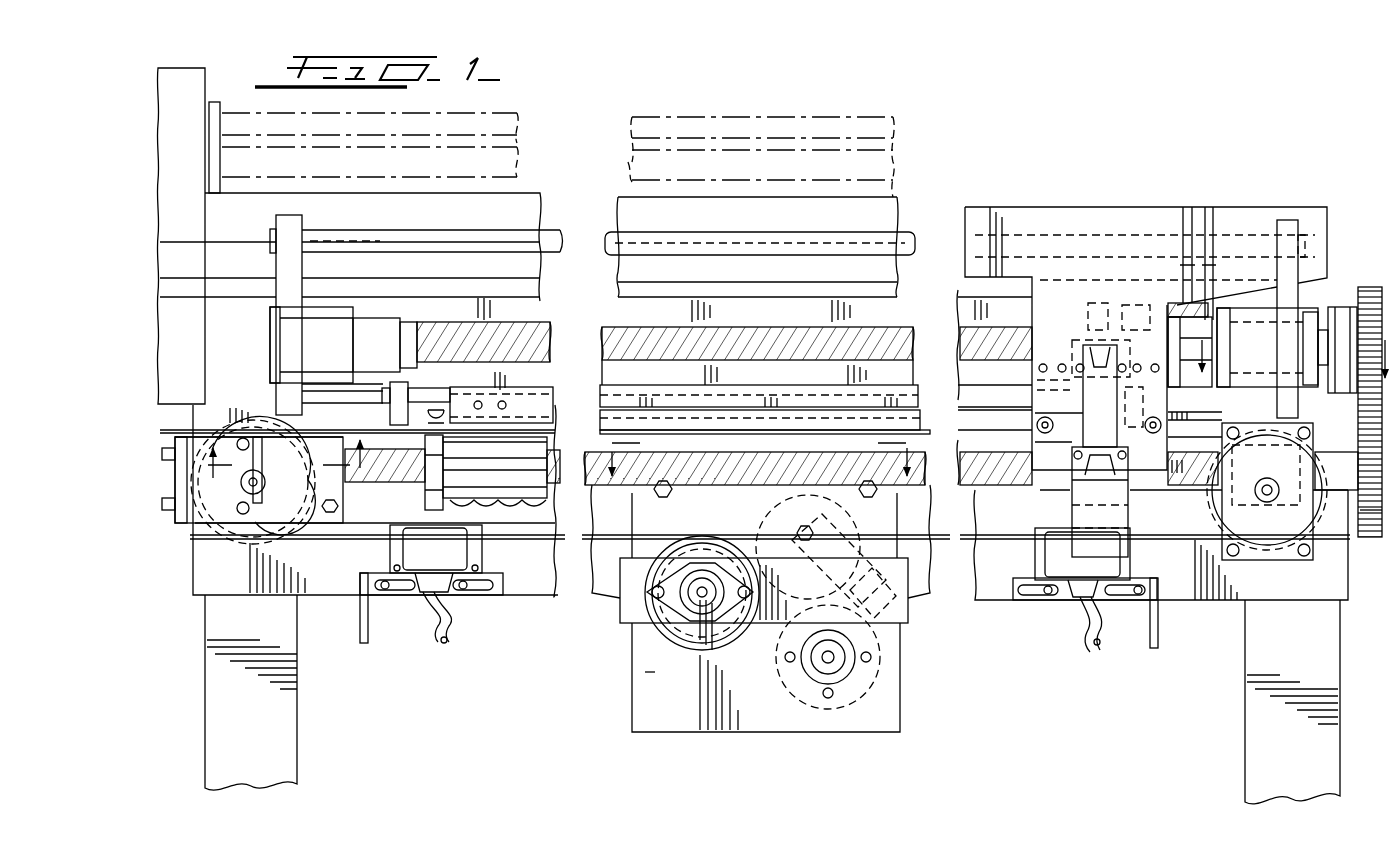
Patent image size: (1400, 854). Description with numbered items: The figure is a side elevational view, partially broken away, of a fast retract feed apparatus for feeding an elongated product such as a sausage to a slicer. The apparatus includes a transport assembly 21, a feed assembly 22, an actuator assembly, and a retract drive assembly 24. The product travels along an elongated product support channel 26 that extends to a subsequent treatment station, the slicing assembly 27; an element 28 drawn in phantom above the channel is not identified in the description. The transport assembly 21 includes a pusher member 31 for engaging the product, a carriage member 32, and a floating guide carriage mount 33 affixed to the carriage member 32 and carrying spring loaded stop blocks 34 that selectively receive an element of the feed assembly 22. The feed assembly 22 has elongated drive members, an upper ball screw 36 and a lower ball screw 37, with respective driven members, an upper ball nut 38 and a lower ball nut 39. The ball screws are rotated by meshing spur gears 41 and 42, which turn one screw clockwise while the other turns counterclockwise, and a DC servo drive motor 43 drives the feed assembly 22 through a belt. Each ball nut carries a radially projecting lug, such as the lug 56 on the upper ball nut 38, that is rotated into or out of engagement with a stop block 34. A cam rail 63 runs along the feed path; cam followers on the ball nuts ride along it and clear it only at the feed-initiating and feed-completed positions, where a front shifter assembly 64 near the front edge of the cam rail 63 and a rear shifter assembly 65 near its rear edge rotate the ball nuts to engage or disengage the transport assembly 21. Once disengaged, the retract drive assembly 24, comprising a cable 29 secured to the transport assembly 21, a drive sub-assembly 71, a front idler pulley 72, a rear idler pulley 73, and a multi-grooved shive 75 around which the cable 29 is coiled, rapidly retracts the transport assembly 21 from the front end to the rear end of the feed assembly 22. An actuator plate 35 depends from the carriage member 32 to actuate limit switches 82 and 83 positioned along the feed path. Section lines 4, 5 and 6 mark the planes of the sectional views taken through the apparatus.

The transport assembly 21 is at (1036, 234).
The feed assembly 22 is at (1312, 402).
The retract drive assembly 24 is at (902, 628).
The elongated product support channel 26 is at (875, 217).
The slicing assembly 27 is at (184, 94).
The upper roll (phantom) 28 is at (790, 128).
The cable 29 is at (333, 535).
The pusher member 31 is at (1092, 233).
The carriage member 32 is at (1147, 343).
The floating guide carriage mount 33 is at (1000, 413).
The stop block 34 is at (1120, 360).
The actuator plate 35 is at (1127, 500).
The upper ball screw 36 is at (602, 338).
The lower ball screw 37 is at (590, 458).
The upper ball nut 38 is at (1192, 303).
The lower ball nut 39 is at (488, 525).
The spur gear 41 is at (1368, 295).
The spur gear 42 is at (1384, 518).
The DC servo drive motor 43 is at (1340, 312).
The lug 56 is at (1093, 347).
The cam rail 63 is at (603, 396).
The front shifter assembly 64 is at (416, 430).
The rear shifter assembly 65 is at (1100, 392).
The drive sub-assembly 71 is at (655, 675).
The front idler pulley 72 is at (210, 443).
The rear idler pulley 73 is at (1318, 522).
The multi-grooved shive 75 is at (790, 667).
The limit switch 82 is at (449, 563).
The limit switch 83 is at (1092, 569).
The section line 4- 4 is at (761, 454).
The section line 5- 5 is at (1281, 353).
The section line 6- 6 is at (282, 471).